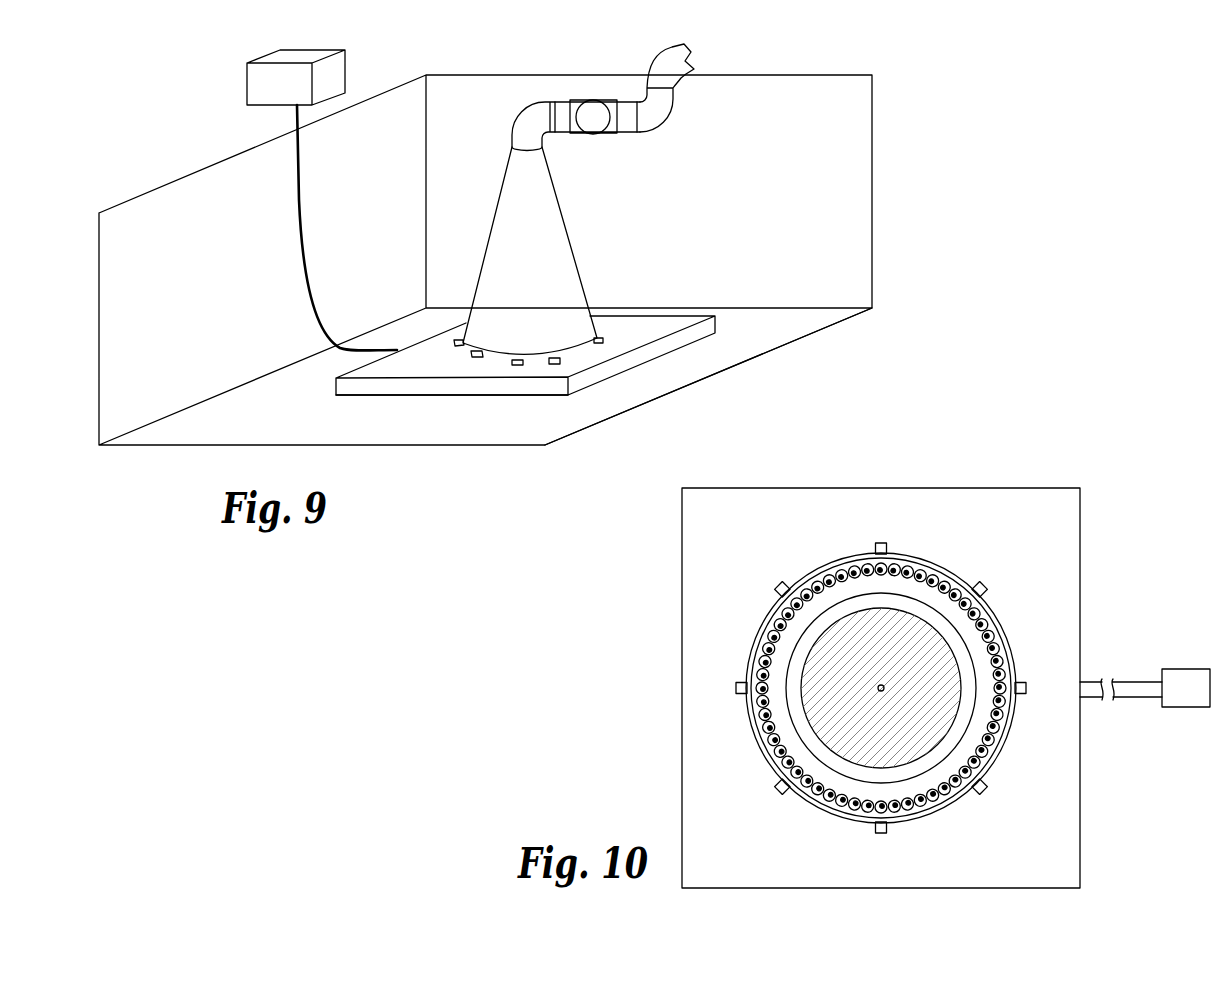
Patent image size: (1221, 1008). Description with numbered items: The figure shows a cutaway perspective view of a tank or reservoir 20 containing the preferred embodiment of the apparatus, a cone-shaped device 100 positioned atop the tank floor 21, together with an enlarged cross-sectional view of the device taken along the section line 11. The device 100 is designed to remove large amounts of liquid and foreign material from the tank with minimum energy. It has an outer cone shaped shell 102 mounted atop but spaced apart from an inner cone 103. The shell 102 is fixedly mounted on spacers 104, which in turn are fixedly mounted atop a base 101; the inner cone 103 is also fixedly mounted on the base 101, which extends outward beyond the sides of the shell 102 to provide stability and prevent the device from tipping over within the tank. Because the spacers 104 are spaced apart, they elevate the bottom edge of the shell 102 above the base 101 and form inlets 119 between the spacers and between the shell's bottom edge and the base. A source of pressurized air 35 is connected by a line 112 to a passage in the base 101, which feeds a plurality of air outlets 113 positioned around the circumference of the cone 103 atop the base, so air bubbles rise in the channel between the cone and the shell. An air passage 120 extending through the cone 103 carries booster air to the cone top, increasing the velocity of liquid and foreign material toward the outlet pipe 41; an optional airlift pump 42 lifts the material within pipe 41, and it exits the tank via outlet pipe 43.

In FIG. 9, the section line 11 is at (430, 242).
In FIG. 9, the tank or reservoir 20 is at (852, 146).
In FIG. 9, the tank floor 21 is at (787, 329).
In FIG. 9, the source of pressurized gas (air) 35 is at (253, 92).
In FIG. 10, the source of pressurized gas (air) 35 is at (1190, 678).
In FIG. 9, the outlet pipe 41 is at (533, 117).
In FIG. 9, the airlift pump 42 is at (600, 118).
In FIG. 9, the outlet pipe 43 is at (625, 110).
In FIG. 9, the cone-shaped device 100 is at (603, 113).
In FIG. 9, the base 101 is at (658, 323).
In FIG. 10, the base 101 is at (1042, 503).
In FIG. 9, the outer cone shaped shell 102 is at (565, 281).
In FIG. 10, the outer cone shaped shell 102 is at (993, 613).
In FIG. 10, the inner cone 103 is at (875, 585).
In FIG. 9, the spacers 104 is at (481, 355).
In FIG. 10, the spacers 104 is at (777, 584).
In FIG. 9, the line 112 is at (304, 224).
In FIG. 10, the air outlets 113 is at (817, 585).
In FIG. 9, the inlets 119 is at (497, 360).
In FIG. 10, the air passage 120 is at (885, 686).